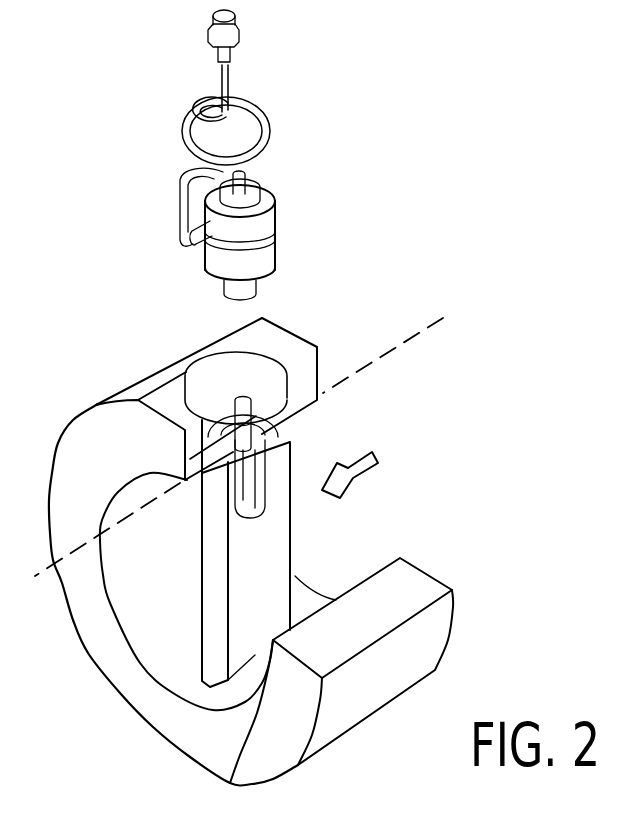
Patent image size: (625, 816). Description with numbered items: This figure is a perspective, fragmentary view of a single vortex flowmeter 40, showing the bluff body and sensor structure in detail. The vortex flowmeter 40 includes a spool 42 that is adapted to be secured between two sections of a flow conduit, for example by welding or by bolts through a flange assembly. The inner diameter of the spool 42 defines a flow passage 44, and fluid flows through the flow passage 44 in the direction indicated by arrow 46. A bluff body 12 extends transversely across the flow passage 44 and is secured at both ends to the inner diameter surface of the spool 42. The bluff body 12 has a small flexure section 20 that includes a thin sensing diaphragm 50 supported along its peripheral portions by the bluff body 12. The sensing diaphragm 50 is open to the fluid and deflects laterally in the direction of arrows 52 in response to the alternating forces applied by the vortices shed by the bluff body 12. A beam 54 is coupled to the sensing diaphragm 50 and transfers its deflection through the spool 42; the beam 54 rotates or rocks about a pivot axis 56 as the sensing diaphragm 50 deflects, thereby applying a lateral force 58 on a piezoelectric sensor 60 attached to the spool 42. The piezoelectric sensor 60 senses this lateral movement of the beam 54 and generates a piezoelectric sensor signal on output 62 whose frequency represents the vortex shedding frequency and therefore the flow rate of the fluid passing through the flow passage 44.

The bluff body 12 is at (194, 572).
The small flexure section 20 is at (249, 532).
The vortex flowmeter 40 is at (105, 268).
The spool 42 is at (84, 433).
The flow passage 44 is at (375, 542).
The arrow 46 is at (363, 472).
The sensing diaphragm 50 is at (244, 512).
The arrows 52 is at (252, 507).
The beam 54 is at (318, 354).
The pivot axis 56 is at (410, 338).
The lateral force 58 is at (232, 392).
The piezoelectric sensor 60 is at (296, 224).
The output 62 is at (236, 72).